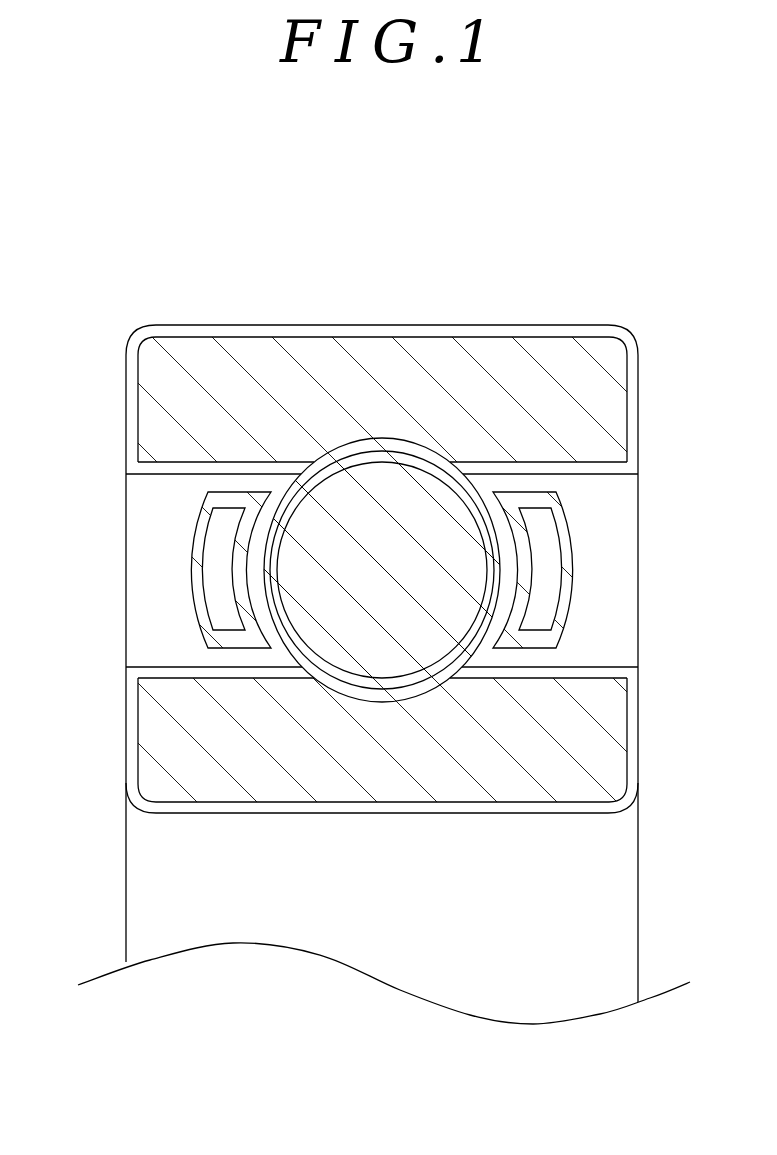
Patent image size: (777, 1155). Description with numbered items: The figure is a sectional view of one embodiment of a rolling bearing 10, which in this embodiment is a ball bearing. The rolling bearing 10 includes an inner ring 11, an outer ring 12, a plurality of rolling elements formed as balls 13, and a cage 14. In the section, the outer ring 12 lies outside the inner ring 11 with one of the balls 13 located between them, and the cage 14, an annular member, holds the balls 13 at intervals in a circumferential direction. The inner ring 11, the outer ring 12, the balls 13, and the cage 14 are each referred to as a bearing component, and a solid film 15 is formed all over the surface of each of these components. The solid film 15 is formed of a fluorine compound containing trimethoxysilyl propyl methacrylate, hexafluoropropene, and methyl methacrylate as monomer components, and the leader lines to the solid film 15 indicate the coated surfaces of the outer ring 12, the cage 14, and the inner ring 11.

The rolling bearing 10 is at (565, 325).
The inner ring 11 is at (491, 766).
The outer ring 12 is at (490, 360).
The balls 13 is at (364, 490).
The cage 14 is at (215, 548).
The solid film 15 is at (468, 492).